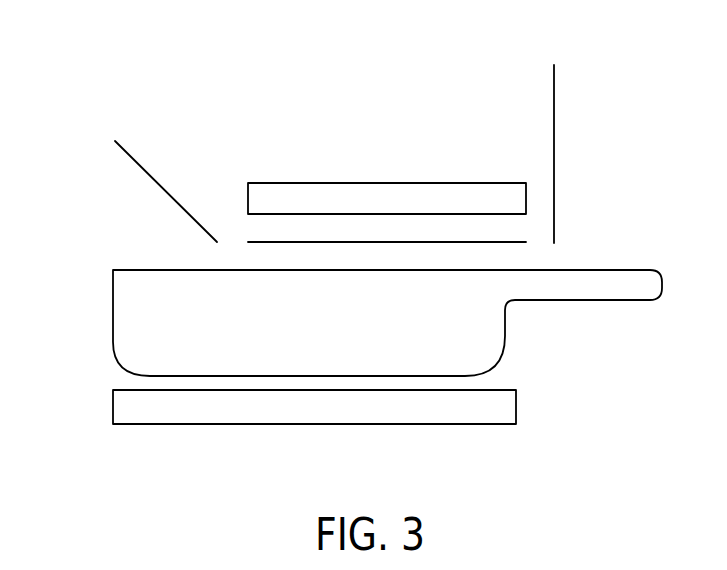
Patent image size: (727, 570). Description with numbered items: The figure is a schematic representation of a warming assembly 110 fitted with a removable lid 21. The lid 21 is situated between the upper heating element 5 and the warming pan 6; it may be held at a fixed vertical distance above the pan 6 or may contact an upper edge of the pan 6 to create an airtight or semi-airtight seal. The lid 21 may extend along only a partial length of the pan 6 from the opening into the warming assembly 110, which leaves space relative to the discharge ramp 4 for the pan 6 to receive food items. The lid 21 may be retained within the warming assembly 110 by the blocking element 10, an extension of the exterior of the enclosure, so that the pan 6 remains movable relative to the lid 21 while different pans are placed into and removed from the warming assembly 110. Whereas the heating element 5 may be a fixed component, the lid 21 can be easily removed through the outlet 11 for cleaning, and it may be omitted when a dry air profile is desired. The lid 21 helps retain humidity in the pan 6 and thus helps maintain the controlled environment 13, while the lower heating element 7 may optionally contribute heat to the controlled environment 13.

The warming assembly 110 is at (127, 97).
The blocking element 10 is at (555, 117).
The discharge ramp 4 is at (148, 175).
The heating element 5 is at (450, 200).
The removable lid 21 is at (507, 242).
The warming pan 6 is at (487, 321).
The controlled environment 13 is at (382, 270).
The outlet 11 is at (493, 378).
The lower heating element 7 is at (518, 408).